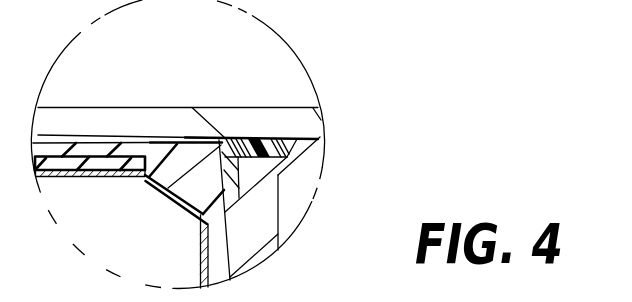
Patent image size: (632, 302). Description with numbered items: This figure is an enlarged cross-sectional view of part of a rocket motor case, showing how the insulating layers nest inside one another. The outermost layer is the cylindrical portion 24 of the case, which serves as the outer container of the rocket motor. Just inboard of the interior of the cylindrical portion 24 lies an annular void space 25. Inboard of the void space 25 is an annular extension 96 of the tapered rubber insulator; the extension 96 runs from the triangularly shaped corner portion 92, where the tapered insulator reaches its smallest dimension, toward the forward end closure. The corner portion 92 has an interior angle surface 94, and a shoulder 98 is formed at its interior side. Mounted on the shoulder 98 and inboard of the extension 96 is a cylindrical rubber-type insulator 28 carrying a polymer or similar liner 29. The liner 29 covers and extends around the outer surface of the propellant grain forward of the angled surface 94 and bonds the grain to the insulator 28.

The cylindrical portion 24 is at (268, 121).
The annular void space 25 is at (100, 135).
The cylindrical rubber-type insulator 28 is at (105, 160).
The liner 29 is at (117, 173).
The triangularly shaped corner portion 92 is at (200, 180).
The interior angle surface 94 is at (163, 192).
The annular extension 96 is at (123, 148).
The shoulder 98 is at (160, 166).